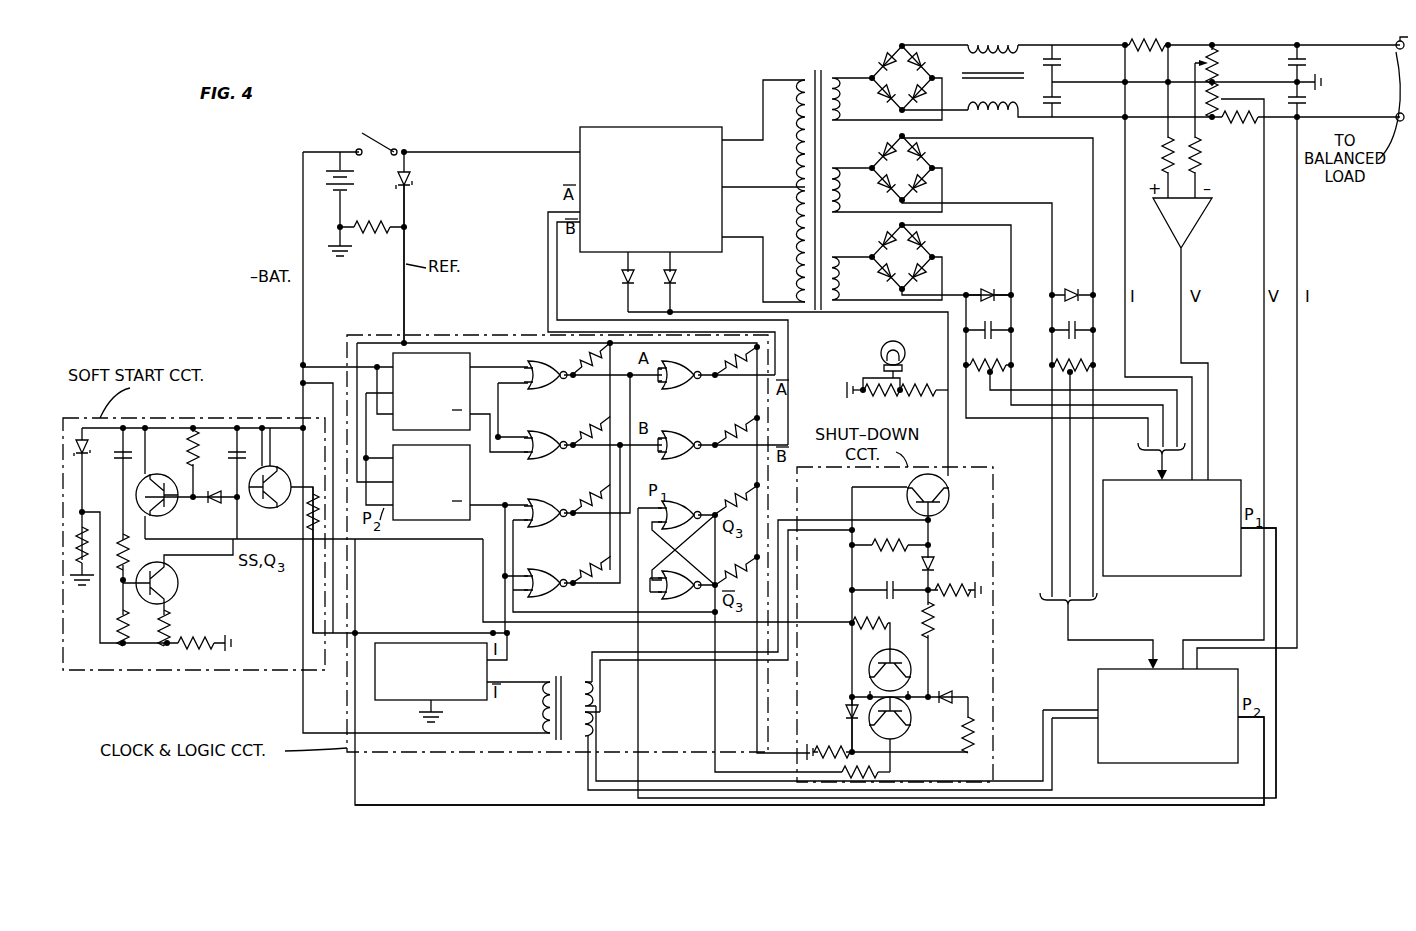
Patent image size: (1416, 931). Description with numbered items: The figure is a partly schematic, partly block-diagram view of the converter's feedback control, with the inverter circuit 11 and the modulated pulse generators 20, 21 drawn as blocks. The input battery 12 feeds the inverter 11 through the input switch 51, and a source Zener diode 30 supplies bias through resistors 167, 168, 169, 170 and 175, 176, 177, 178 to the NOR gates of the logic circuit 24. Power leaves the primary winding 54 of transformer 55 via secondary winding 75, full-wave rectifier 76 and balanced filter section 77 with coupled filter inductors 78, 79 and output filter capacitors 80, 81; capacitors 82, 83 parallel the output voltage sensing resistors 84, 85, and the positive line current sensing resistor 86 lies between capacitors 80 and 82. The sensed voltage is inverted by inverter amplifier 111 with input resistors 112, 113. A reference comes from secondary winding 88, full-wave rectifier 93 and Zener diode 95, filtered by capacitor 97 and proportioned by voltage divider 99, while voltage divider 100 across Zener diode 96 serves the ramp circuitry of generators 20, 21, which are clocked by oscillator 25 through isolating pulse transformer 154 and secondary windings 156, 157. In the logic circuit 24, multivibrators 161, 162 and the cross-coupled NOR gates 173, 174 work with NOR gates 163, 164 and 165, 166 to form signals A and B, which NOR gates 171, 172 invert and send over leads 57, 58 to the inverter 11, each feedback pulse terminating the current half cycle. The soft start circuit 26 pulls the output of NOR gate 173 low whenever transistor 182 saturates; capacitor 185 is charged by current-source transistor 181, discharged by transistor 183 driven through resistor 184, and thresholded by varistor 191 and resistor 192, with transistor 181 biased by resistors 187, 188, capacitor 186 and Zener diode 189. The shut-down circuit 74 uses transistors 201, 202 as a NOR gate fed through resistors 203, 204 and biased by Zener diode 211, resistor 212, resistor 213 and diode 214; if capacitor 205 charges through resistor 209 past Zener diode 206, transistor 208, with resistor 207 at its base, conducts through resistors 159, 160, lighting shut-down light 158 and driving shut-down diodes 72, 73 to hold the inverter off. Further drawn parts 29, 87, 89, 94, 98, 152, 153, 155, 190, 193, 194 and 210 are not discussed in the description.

The inverter circuit 11 is at (700, 127).
The input battery 12 is at (346, 189).
The modulated pulse generator 20 is at (1220, 480).
The modulated pulse generator 21 is at (1098, 698).
The logic circuit 24 is at (365, 335).
The oscillator 25 is at (385, 700).
The soft start circuit 26 is at (222, 418).
The resistor 29 is at (366, 233).
The source Zener diode 30 is at (409, 185).
The input switch 51 is at (368, 140).
The primary winding 54 is at (790, 150).
The transformer 55 is at (832, 65).
The lead 57 is at (548, 300).
The lead 58 is at (557, 300).
The shut-down diode 72 is at (621, 280).
The shut-down diode 73 is at (677, 280).
The shut-down circuit 74 is at (960, 467).
The secondary winding 75 is at (845, 100).
The full-wave rectifier 76 is at (884, 68).
The balanced filter section 77 is at (958, 65).
The filter inductor 78 is at (1018, 60).
The filter inductor 79 is at (1000, 110).
The output filter capacitor 80 is at (1062, 64).
The output filter capacitor 81 is at (1062, 100).
The capacitor 82 is at (1308, 64).
The capacitor 83 is at (1308, 101).
The output voltage sensing resistor 84 is at (1222, 60).
The output voltage sensing resistor 85 is at (1212, 114).
The positive line current sensing resistor 86 is at (1152, 52).
The resistor 87 is at (1238, 122).
The secondary winding 88 is at (845, 191).
The secondary winding 89 is at (845, 280).
The full-wave rectifier 93 is at (920, 155).
The rectifier bridge 94 is at (920, 245).
The Zener diode 95 is at (1078, 288).
The Zener diode reference 96 is at (990, 288).
The capacitor 97 is at (1078, 322).
The capacitor 98 is at (990, 322).
The voltage divider 99 is at (1078, 358).
The voltage divider 100 is at (996, 358).
The inverter amplifier 111 is at (1196, 222).
The resistor 112 is at (1162, 160).
The resistor 113 is at (1200, 158).
The P1 conductor 152 is at (1278, 604).
The P2 conductor 153 is at (1266, 778).
The isolating pulse transformer 154 is at (577, 670).
The primary winding 155 is at (536, 706).
The secondary winding 156 is at (590, 725).
The secondary winding 157 is at (590, 690).
The shut-down light 158 is at (895, 341).
The resistor 159 is at (878, 398).
The resistor 160 is at (926, 385).
The bistable multivibrator circuit 161 is at (448, 353).
The bistable multivibrator circuit 162 is at (435, 520).
The NOR gate 163 is at (548, 382).
The NOR gate 164 is at (546, 572).
The NOR gate 165 is at (546, 432).
The NOR gate 166 is at (546, 500).
The resistor 167 is at (592, 358).
The resistor 168 is at (596, 428).
The resistor 169 is at (596, 496).
The resistor 170 is at (596, 567).
The NOR gate 171 is at (680, 383).
The NOR gate 172 is at (684, 436).
The NOR gate 173 is at (692, 508).
The NOR gate 174 is at (668, 596).
The resistor 175 is at (728, 358).
The resistor 176 is at (741, 435).
The resistor 177 is at (740, 508).
The resistor 178 is at (741, 575).
The transistor 181 is at (175, 582).
The transistor 182 is at (176, 463).
The transistor 183 is at (279, 466).
The resistor 184 is at (307, 515).
The capacitor 185 is at (234, 455).
The capacitor 186 is at (116, 455).
The resistor 187 is at (127, 552).
The resistor 188 is at (127, 630).
The reference voltage Zener diode 189 is at (92, 472).
The resistor 190 is at (92, 555).
The varistor 191 is at (212, 505).
The resistor 192 is at (190, 448).
The resistor 193 is at (186, 649).
The resistor 194 is at (170, 618).
The transistor 201 is at (895, 652).
The transistor 202 is at (908, 733).
The resistor 203 is at (873, 610).
The resistor 204 is at (882, 774).
The capacitor 205 is at (887, 588).
The Zener diode 206 is at (934, 556).
The resistor 207 is at (888, 551).
The transistor 208 is at (946, 495).
The resistor 209 is at (936, 618).
The resistor 210 is at (944, 586).
The Zener diode 211 is at (846, 712).
The resistor 212 is at (836, 746).
The resistor 213 is at (958, 726).
The diode 214 is at (936, 692).